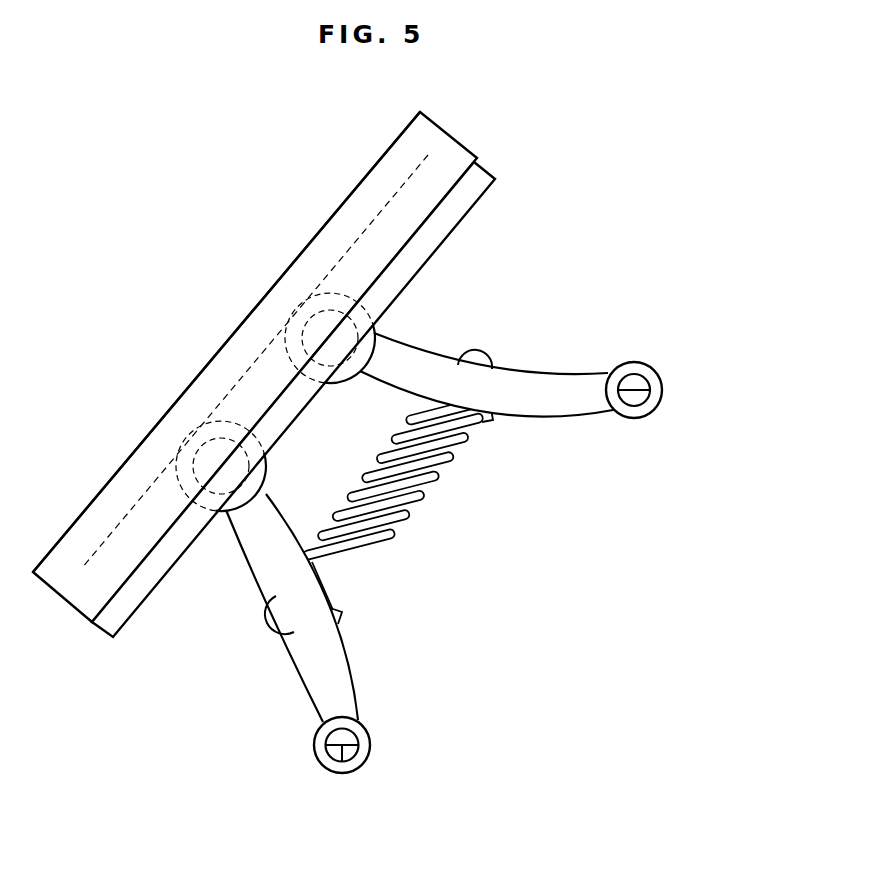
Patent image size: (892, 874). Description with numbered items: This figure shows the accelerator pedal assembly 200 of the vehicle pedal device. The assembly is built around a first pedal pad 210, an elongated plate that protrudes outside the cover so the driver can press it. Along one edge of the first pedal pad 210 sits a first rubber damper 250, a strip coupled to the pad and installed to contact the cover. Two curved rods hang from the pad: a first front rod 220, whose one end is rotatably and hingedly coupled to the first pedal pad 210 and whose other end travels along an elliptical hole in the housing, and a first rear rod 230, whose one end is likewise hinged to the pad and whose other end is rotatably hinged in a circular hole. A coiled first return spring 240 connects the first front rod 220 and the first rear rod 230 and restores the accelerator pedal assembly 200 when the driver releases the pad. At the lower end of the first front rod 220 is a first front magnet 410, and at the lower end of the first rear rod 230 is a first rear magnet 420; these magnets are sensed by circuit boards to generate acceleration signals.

The accelerator pedal assembly 200 is at (333, 204).
The first pedal pad 210 is at (215, 382).
The first rubber damper 250 is at (463, 202).
The first front rod 220 is at (575, 395).
The first rear rod 230 is at (323, 678).
The first return spring 240 is at (390, 535).
The first front magnet 410 is at (634, 390).
The first rear magnet 420 is at (342, 762).